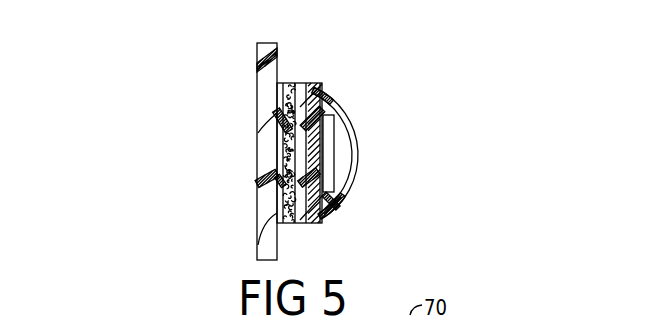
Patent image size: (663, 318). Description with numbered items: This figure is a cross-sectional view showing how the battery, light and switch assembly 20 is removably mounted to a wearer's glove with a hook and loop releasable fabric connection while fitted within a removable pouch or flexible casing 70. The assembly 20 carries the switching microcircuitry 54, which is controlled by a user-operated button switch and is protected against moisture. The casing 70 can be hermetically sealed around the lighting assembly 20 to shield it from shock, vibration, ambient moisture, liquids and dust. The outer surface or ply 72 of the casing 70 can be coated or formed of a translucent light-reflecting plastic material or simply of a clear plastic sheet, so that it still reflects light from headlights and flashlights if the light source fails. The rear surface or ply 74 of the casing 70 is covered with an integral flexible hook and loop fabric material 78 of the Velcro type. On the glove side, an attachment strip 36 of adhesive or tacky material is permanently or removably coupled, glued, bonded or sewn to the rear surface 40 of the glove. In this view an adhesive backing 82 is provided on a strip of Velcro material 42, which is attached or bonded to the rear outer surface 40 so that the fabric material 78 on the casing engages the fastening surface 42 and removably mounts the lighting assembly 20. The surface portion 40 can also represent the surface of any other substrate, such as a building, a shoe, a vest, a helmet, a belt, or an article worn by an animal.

The rear surface 40 is at (258, 58).
The hook and loop fabric fastening surface 42 is at (293, 83).
The hook and loop fabric material 78 is at (304, 83).
The adhesive backing 82 is at (283, 130).
The switching microcircuitry 54 is at (329, 101).
The battery, light and switch assembly 20 is at (330, 147).
The outer surface or ply 72 is at (356, 160).
The pouch or flexible casing 70 is at (322, 216).
The rear surface or ply 74 is at (308, 220).
The attachment strip 36 is at (258, 245).